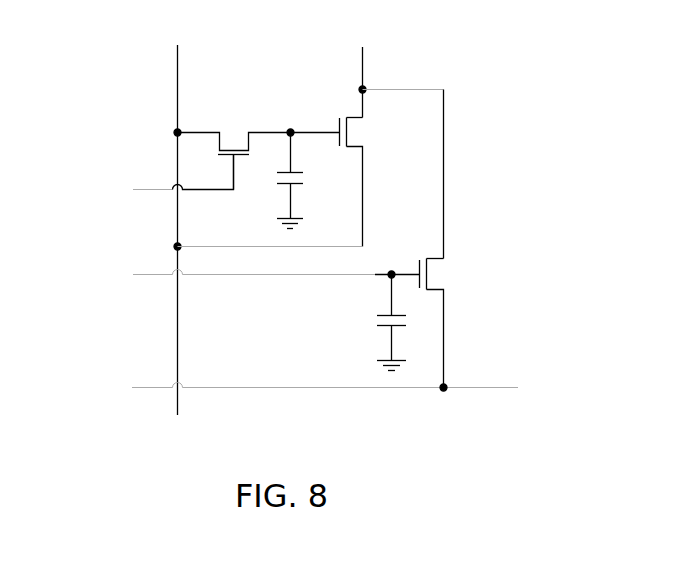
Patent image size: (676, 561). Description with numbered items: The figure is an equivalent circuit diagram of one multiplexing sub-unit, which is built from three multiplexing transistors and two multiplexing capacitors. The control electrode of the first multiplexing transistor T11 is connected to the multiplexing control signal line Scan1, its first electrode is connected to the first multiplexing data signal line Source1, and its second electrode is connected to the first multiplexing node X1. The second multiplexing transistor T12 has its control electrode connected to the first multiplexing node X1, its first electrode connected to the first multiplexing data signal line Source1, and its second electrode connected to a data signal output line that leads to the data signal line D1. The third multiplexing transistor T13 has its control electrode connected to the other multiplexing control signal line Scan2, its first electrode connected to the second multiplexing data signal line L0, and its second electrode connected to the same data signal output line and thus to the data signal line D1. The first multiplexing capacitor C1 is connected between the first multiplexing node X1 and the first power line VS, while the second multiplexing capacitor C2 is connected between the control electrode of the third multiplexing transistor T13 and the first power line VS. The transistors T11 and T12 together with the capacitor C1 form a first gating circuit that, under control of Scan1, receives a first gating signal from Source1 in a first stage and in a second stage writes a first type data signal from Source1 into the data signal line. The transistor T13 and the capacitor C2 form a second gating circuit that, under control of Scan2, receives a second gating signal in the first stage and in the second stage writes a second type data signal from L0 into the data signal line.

The first multiplexing transistor T11 is at (234, 146).
The second multiplexing transistor T12 is at (288, 182).
The third multiplexing transistor T13 is at (451, 323).
The first multiplexing capacitor C1 is at (309, 181).
The second multiplexing capacitor C2 is at (374, 323).
The first multiplexing node X1 is at (309, 119).
The data signal line D1 is at (397, 141).
The first power line VS is at (342, 294).
The multiplexing control signal line Scan1 is at (153, 179).
The multiplexing control signal line Scan2 is at (246, 274).
The second multiplexing data signal line L0 is at (302, 388).
The first multiplexing data signal line Source1 is at (179, 246).